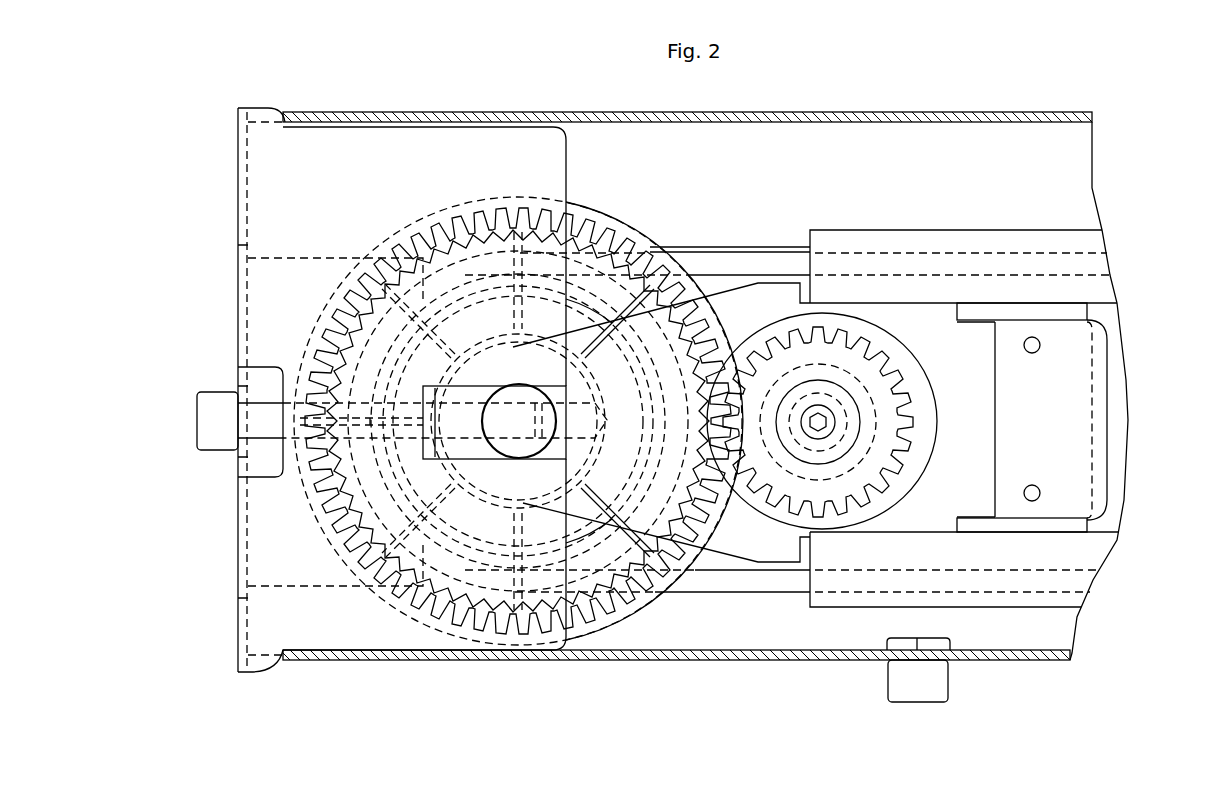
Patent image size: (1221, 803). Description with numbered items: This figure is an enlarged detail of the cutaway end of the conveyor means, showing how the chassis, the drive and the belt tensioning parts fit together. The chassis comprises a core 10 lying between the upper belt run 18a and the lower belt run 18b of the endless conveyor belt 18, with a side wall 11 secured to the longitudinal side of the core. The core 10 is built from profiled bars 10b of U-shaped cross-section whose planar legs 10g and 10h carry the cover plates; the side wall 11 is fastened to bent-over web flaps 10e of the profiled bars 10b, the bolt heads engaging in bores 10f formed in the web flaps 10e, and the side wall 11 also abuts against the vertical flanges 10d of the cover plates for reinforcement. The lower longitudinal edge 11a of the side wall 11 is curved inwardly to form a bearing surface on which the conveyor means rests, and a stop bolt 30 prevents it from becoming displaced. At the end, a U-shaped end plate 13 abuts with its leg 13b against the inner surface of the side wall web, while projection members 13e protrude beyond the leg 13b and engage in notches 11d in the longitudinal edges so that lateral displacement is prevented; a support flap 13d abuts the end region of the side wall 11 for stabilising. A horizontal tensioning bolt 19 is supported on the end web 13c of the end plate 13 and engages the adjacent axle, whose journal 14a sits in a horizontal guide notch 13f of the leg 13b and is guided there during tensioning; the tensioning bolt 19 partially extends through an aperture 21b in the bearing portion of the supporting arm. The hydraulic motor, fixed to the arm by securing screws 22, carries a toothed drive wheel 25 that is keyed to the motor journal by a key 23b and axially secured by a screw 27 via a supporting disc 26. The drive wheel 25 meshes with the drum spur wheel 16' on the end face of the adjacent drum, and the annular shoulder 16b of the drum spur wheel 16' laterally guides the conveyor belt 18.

The core 10 is at (1011, 380).
The profiled bars 10b is at (1125, 412).
The vertical flanges of the cover plates 10d is at (1087, 243).
The web flaps 10e is at (1075, 436).
The bores 10f is at (1043, 347).
The U-shaped leg of profiled bar 10g is at (1033, 312).
The U-shaped leg of profiled bar 10h is at (1055, 528).
The side wall 11 is at (916, 99).
The lower longitudinal edge 11a is at (775, 662).
The notches 11d is at (272, 118).
The end plate 13 is at (220, 565).
The U-shaped leg of end plate 13b is at (308, 620).
The end face or web of end plate 13c is at (238, 600).
The support flap 13d is at (238, 452).
The projection member 13e is at (258, 108).
The horizontal guide notch 13f is at (557, 453).
The journal 14a is at (526, 400).
The drum spur wheel 16' is at (518, 398).
The annular shoulder 16b is at (640, 247).
The conveyor belt 18 is at (695, 609).
The upper belt run 18a is at (757, 262).
The lower belt run 18b is at (760, 573).
The tensioning bolt 19 is at (210, 405).
The aperture 21b is at (597, 440).
The securing screws 22 is at (841, 422).
The key 23b is at (773, 417).
The toothed drive wheel 25 is at (888, 440).
The supporting disc 26 is at (850, 445).
The screw 27 is at (826, 440).
The stop bolt 30 is at (921, 688).